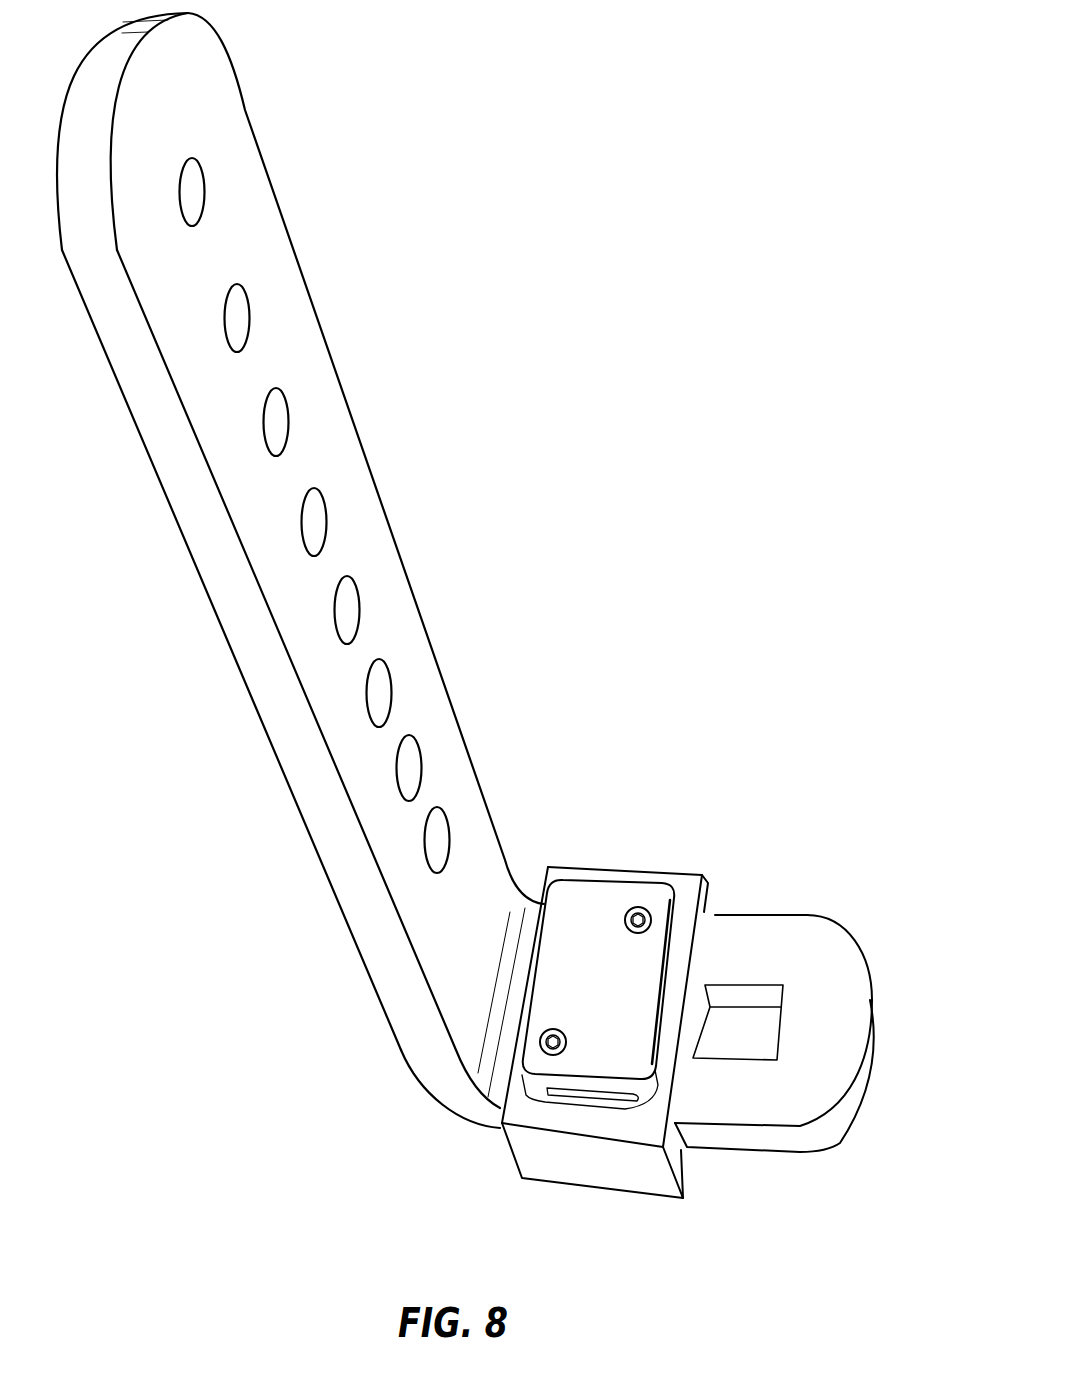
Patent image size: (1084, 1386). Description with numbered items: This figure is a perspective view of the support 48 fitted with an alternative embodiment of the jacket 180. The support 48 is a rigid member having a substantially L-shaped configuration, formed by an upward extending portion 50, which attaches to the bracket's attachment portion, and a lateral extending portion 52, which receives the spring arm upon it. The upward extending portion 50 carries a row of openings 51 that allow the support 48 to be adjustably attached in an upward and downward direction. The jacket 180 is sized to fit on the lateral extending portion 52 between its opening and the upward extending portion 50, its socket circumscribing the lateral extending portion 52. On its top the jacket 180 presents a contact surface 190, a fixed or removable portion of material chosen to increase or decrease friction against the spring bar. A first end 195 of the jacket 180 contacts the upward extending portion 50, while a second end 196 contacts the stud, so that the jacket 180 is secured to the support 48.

The support 48 is at (422, 705).
The upward extending portion 50 is at (342, 395).
The openings 51 is at (348, 610).
The lateral extending portion 52 is at (853, 945).
The jacket 180 is at (680, 885).
The contact surface 190 is at (588, 918).
The first end 195 is at (550, 880).
The second end 196 is at (705, 907).